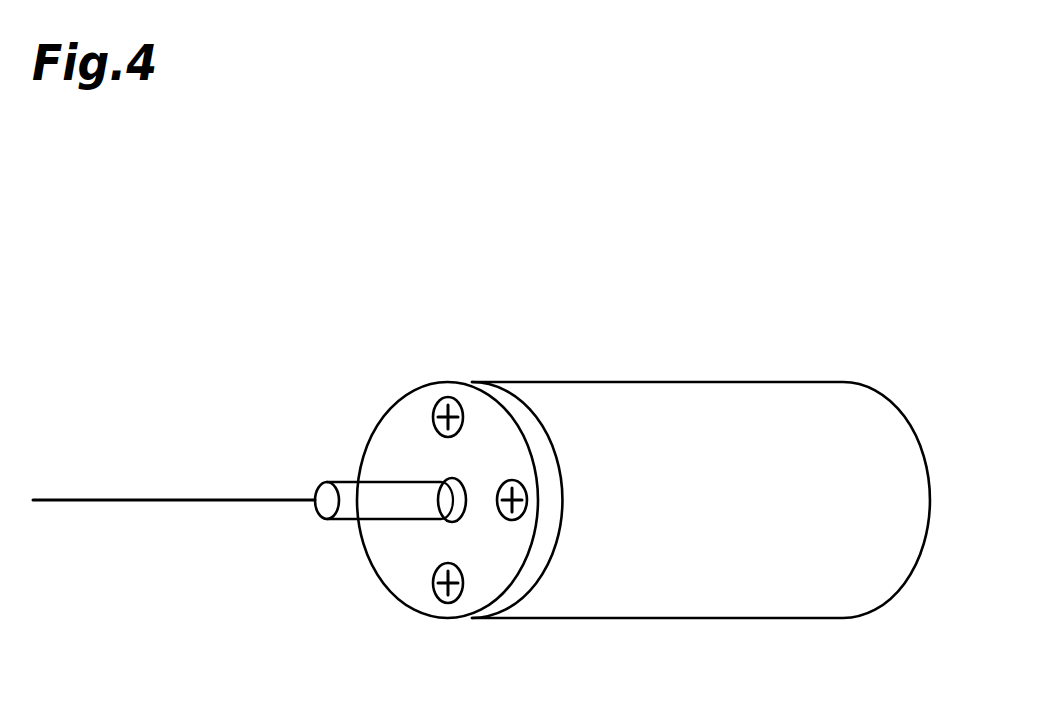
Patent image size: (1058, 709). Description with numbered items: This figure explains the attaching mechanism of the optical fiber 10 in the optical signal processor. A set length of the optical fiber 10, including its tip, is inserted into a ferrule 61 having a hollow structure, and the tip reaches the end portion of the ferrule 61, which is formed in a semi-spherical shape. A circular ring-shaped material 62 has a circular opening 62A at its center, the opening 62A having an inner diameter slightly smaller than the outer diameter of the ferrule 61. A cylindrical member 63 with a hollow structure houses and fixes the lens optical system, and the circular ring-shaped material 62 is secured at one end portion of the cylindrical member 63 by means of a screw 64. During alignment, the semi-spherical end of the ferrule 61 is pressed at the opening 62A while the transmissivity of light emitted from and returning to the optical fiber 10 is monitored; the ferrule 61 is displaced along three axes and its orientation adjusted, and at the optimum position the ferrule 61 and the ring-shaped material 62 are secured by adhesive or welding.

The optical fiber 10 is at (118, 498).
The ferrule 61 is at (352, 507).
The circular ring-shaped material 62 is at (523, 413).
The circular opening 62A is at (443, 480).
The cylindrical member 63 is at (784, 382).
The screw 64 is at (438, 590).